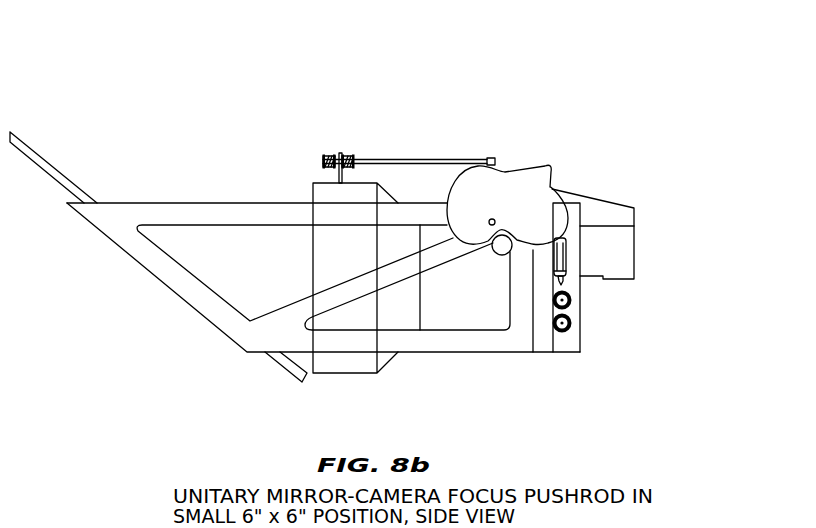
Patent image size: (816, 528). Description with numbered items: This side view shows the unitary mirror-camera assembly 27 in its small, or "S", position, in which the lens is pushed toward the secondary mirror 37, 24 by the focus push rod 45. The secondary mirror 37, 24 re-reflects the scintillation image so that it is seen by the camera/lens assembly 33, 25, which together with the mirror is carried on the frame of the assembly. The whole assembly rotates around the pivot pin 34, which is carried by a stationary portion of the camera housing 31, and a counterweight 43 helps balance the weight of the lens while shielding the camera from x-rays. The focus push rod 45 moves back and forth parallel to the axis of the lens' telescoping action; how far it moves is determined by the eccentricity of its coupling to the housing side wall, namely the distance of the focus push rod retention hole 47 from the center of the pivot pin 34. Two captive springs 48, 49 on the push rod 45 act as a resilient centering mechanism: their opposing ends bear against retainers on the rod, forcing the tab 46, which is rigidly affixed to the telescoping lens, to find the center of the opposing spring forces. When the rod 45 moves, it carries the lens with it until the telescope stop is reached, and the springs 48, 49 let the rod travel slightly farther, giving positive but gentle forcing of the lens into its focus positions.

The focus push rod 45 is at (522, 43).
The captive spring 48 is at (329, 148).
The captive spring 49 is at (343, 148).
The tab 46 is at (332, 174).
The focus push rod retention hole 47 is at (495, 213).
The camera housing 31 is at (522, 195).
The counterweight 43 is at (613, 247).
The secondary mirror 37 is at (158, 257).
The secondary mirror 24 is at (42, 163).
The unitary mirror-camera assembly 27 is at (147, 388).
The camera/lens assembly 33 is at (543, 322).
The lens 25 is at (460, 388).
The pivot pin 34 is at (507, 252).